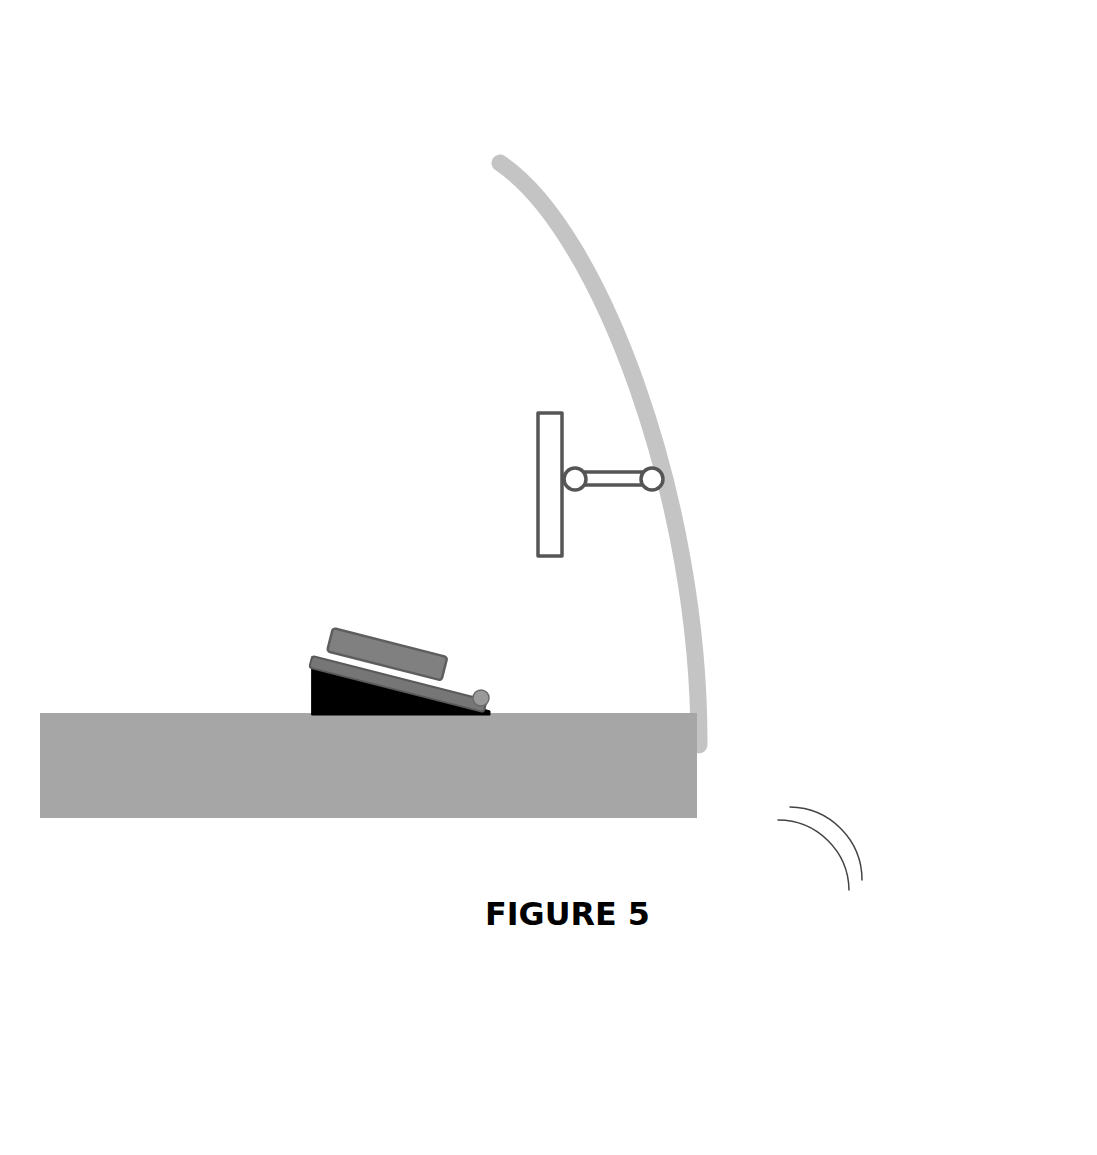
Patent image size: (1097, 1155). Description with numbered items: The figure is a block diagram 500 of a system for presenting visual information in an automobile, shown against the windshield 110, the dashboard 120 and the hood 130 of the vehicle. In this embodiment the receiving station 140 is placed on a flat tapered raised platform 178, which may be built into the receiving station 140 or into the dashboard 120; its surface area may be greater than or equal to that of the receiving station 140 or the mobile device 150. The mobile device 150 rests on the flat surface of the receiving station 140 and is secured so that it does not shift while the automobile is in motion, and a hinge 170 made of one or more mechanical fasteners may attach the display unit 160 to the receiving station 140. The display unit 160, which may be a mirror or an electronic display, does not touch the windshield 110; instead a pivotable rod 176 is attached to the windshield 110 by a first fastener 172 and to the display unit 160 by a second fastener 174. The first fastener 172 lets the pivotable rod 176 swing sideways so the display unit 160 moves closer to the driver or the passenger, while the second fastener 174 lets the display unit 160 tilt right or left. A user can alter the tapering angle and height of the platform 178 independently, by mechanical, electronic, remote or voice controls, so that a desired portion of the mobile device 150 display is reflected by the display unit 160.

The block diagram 500 is at (572, 68).
The windshield 110 is at (590, 288).
The dashboard 120 is at (435, 814).
The hood 130 is at (826, 794).
The receiving station 140 is at (308, 643).
The mobile device 150 is at (390, 624).
The display unit 160 is at (522, 416).
The hinge 170 is at (500, 684).
The first fastener 172 is at (671, 463).
The second fastener 174 is at (594, 455).
The pivotable rod 176 is at (619, 498).
The flat tapered raised platform 178 is at (298, 676).